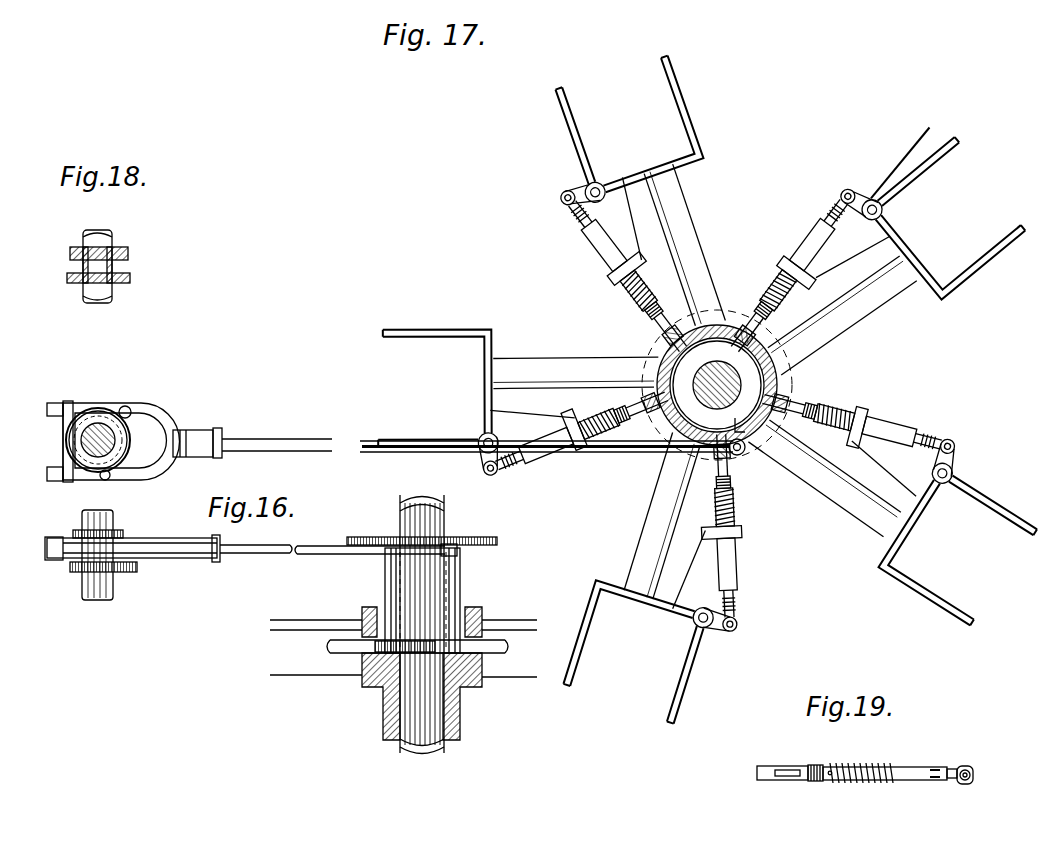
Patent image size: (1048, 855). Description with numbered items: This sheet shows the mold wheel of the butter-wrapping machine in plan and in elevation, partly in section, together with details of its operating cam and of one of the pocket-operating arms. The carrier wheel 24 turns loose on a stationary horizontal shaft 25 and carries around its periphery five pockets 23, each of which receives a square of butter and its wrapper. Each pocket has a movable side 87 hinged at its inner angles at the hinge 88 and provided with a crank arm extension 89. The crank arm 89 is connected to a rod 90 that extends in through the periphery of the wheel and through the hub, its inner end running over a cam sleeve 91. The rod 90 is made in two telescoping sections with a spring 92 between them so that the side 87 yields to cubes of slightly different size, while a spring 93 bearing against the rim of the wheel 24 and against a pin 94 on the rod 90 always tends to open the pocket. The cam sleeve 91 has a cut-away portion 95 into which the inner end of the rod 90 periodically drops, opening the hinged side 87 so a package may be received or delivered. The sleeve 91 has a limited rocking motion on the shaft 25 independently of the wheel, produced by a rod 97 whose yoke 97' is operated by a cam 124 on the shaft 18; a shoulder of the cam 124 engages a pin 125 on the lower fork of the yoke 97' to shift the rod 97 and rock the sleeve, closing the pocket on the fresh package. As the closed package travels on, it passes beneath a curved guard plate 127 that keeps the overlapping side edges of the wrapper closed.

In FIG. 18, the shaft 18 is at (82, 440).
In FIG. 17, the pocket 23 is at (673, 74).
In FIG. 17, the carrier wheel 24 is at (697, 249).
In FIG. 16, the carrier wheel 24 is at (326, 623).
In FIG. 17, the stationary horizontal shaft 25 is at (695, 378).
In FIG. 16, the stationary horizontal shaft 25 is at (420, 746).
In FIG. 17, the hinged side 87 is at (907, 171).
In FIG. 17, the hinge 88 is at (875, 216).
In FIG. 17, the crank arm extension 89 is at (853, 196).
In FIG. 17, the rod 90 is at (604, 244).
In FIG. 19, the rod 90 is at (915, 779).
In FIG. 17, the cam sleeve 91 is at (676, 419).
In FIG. 16, the cam sleeve 91 is at (376, 641).
In FIG. 17, the spring 92 is at (670, 313).
In FIG. 19, the spring 92 is at (817, 770).
In FIG. 17, the spring 93 is at (640, 297).
In FIG. 19, the spring 93 is at (882, 766).
In FIG. 17, the pin 94 is at (684, 297).
In FIG. 19, the pin 94 is at (832, 781).
In FIG. 17, the cut-away portion 95 is at (772, 363).
In FIG. 16, the cut-away portion 95 is at (462, 605).
In FIG. 18, the rod 97 is at (252, 435).
In FIG. 16, the rod 97 is at (338, 568).
In FIG. 18, the yoke 97' is at (124, 426).
In FIG. 16, the yoke 97' is at (132, 555).
In FIG. 18, the cam 124 is at (115, 252).
In FIG. 18, the pin 125 is at (101, 479).
In FIG. 18, the curved guard plate 127 is at (125, 405).